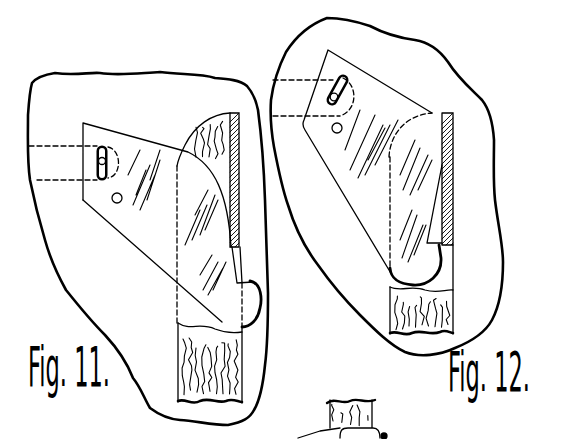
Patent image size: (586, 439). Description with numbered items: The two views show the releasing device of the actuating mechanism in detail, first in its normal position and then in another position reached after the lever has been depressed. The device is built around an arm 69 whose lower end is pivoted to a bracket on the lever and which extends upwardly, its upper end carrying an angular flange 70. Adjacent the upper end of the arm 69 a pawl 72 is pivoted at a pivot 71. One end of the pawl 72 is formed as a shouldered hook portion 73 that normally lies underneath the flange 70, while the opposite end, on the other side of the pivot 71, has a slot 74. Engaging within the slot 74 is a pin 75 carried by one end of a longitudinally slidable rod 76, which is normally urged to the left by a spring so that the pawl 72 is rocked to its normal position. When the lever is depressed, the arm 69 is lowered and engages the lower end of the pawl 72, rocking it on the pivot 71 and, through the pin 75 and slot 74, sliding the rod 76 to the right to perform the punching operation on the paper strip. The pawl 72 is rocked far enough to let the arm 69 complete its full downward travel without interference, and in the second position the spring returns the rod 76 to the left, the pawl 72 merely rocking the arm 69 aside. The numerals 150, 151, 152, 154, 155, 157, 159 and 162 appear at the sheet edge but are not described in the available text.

In FIG. 11, the arm 69 is at (223, 376).
In FIG. 12, the arm 69 is at (442, 310).
In FIG. 11, the angular flange 70 is at (233, 161).
In FIG. 12, the angular flange 70 is at (453, 140).
In FIG. 11, the pivot 71 is at (113, 202).
In FIG. 12, the pivot 71 is at (341, 125).
In FIG. 11, the pawl 72 is at (127, 223).
In FIG. 12, the pawl 72 is at (373, 228).
In FIG. 11, the shouldered hook portion 73 is at (245, 284).
In FIG. 12, the shouldered hook portion 73 is at (453, 243).
In FIG. 11, the slot 74 is at (104, 152).
In FIG. 12, the slot 74 is at (343, 80).
In FIG. 11, the pin 75 is at (101, 159).
In FIG. 12, the pin 75 is at (333, 96).
In FIG. 11, the longitudinally slidable rod 76 is at (62, 172).
In FIG. 12, the longitudinally slidable rod 76 is at (290, 95).
In FIG. 12, the base 150 is at (130, 438).
In FIG. 12, the support 151 is at (272, 430).
In FIG. 12, the arm 152 is at (423, 438).
In FIG. 12, the bracket 154 is at (313, 438).
In FIG. 12, the frame 155 is at (196, 432).
In FIG. 12, the lever 157 is at (400, 438).
In FIG. 12, the link 159 is at (447, 438).
In FIG. 12, the spring 162 is at (392, 438).